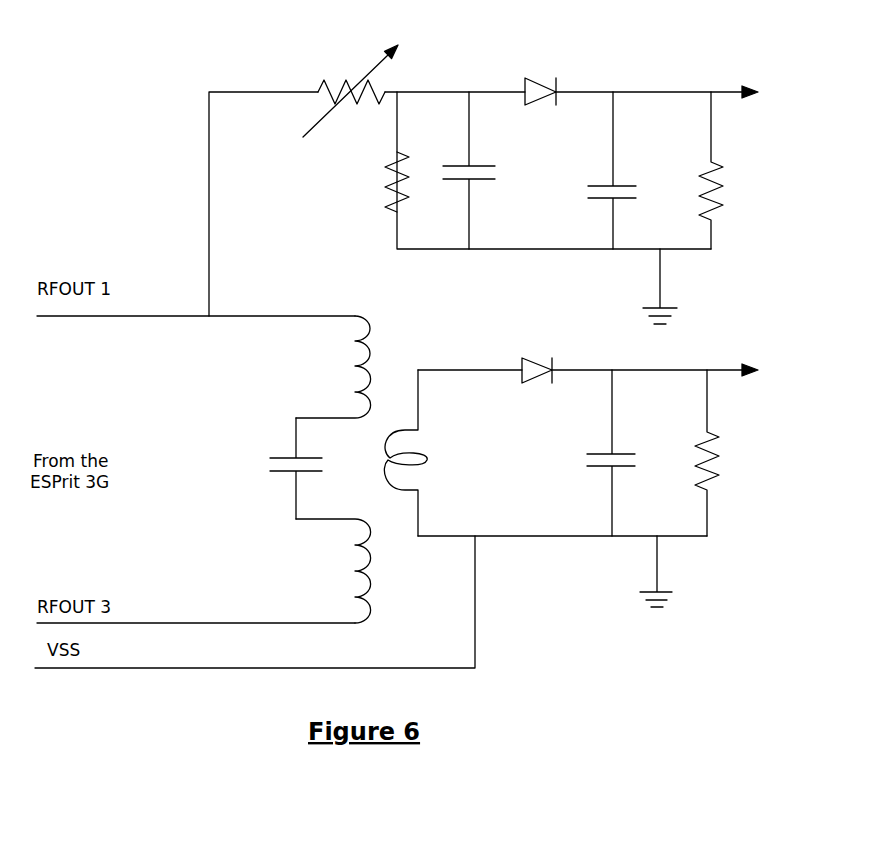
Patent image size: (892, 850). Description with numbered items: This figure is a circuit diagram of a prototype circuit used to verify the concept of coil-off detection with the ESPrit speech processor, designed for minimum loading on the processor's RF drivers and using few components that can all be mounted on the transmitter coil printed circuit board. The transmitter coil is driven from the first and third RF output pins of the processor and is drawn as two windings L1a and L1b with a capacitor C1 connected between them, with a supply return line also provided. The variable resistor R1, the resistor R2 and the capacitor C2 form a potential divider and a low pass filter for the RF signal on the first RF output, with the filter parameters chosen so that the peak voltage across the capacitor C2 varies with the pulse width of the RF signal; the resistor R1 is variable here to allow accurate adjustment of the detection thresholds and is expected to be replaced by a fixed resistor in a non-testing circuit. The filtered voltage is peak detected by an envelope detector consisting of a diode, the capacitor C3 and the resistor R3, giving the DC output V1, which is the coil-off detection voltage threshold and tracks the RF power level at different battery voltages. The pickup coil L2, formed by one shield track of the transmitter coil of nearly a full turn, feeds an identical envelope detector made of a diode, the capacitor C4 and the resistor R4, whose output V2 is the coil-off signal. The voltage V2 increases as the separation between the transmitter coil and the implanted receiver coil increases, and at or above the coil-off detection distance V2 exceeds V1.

The variable resistor R1 is at (350, 77).
The resistor R2 is at (374, 182).
The resistor R3 is at (735, 170).
The resistor R4 is at (731, 453).
The capacitor C1 is at (274, 468).
The capacitor C2 is at (480, 170).
The capacitor C3 is at (624, 170).
The capacitor C4 is at (600, 453).
The transmitter coil winding L1a is at (325, 367).
The transmitter coil winding L1b is at (326, 571).
The pickup coil L2 is at (441, 453).
The coil-off detection voltage threshold V1 is at (740, 77).
The coil-off signal V2 is at (739, 356).